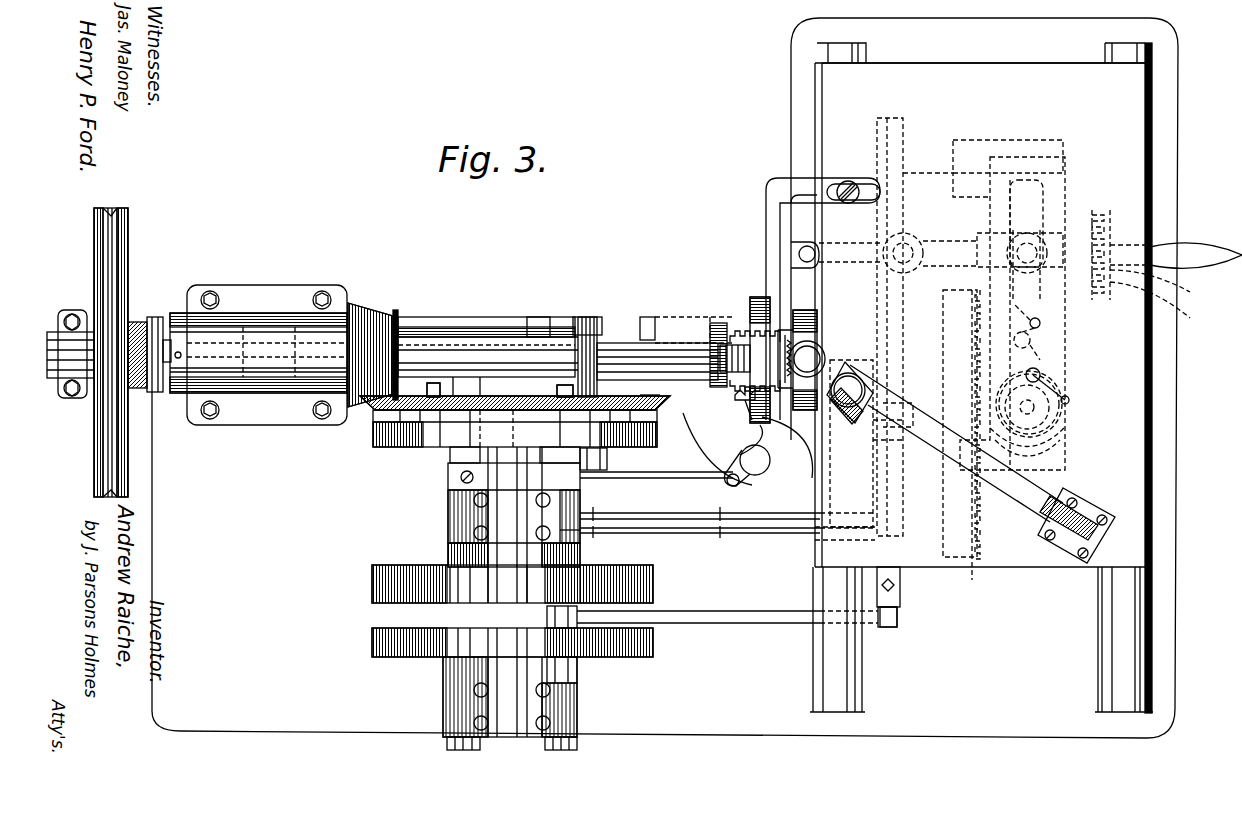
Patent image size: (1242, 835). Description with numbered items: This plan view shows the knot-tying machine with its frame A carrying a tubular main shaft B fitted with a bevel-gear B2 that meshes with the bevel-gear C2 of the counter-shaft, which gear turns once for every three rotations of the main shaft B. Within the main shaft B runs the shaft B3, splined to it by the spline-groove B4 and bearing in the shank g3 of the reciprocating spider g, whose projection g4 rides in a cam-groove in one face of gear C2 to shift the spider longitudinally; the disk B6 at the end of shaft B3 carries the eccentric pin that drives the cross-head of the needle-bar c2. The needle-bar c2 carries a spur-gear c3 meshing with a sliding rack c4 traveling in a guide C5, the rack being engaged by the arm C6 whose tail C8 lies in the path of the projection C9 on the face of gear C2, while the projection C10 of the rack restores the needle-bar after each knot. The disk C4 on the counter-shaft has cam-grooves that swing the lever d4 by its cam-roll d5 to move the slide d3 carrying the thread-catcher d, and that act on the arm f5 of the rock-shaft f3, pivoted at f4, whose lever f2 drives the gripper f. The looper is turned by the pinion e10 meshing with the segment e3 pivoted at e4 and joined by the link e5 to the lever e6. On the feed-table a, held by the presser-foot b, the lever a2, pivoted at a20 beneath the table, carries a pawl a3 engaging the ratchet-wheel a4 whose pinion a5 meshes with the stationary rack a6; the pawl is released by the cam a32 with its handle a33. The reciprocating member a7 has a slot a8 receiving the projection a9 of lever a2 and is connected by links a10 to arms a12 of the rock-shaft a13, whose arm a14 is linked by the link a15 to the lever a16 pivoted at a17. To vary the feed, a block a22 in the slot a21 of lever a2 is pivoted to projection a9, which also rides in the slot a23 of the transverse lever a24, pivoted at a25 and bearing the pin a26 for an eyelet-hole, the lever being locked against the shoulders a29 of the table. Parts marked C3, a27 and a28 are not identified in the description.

The frame A is at (665, 378).
The feed-table a is at (980, 77).
The gripper f is at (109, 352).
The main shaft B is at (258, 328).
The bevel-gear B2 is at (373, 312).
The shaft B3 is at (492, 345).
The spline-groove B4 is at (400, 345).
The disk B6 is at (753, 312).
The bevel-gear C2 is at (372, 418).
The gear C3 is at (372, 642).
The disk C4 is at (372, 582).
The guide C5 is at (687, 316).
The arm or projection C6 is at (587, 318).
The tail or projection C8 is at (557, 390).
The projection C9 is at (427, 388).
The projection C10 is at (740, 349).
The needle-bar c2 is at (822, 345).
The spur-gear c3 is at (818, 362).
The sliding rack c4 is at (808, 330).
The thread-catcher d is at (836, 375).
The slide d3 is at (700, 520).
The lever d4 is at (450, 565).
The cam-roll d5 is at (578, 545).
The presser-foot b is at (878, 392).
The segment e3 is at (738, 403).
The pivot e4 is at (757, 472).
The link e5 is at (663, 480).
The arm or lever e6 is at (607, 464).
The pinion e10 is at (748, 405).
The lever f2 is at (450, 455).
The rock-shaft f3 is at (462, 750).
The pivot f4 is at (443, 700).
The upwardly-projecting arm f5 is at (450, 618).
The reciprocating spider or frame g is at (790, 410).
The shank g3 is at (622, 360).
The projection g4 is at (645, 396).
The lever a2 is at (1042, 326).
The pawl a3 is at (1030, 345).
The ratchet-wheel a4 is at (1062, 405).
The pinion or gear-wheel a5 is at (1064, 440).
The stationary rack a6 is at (975, 582).
The reciprocating member a7 is at (1067, 180).
The slot or channel a8 is at (1043, 200).
The projection a9 is at (1005, 245).
The links a10 is at (953, 160).
The arms a12 is at (925, 188).
The rock-shaft a13 is at (893, 118).
The arm a14 is at (898, 602).
The link a15 is at (752, 624).
The lever a16 is at (577, 672).
The pivot a17 is at (565, 750).
The pivotal connection a20 is at (1049, 413).
The slot a21 is at (1100, 225).
The block a22 is at (1110, 235).
The slot a23 is at (1163, 288).
The lever a24 is at (1163, 306).
The pivot a25 is at (898, 250).
The pin a26 is at (791, 250).
The bracket a27 is at (772, 215).
The screw a28 is at (772, 180).
The shoulders a29 is at (1110, 248).
The cam or eccentric a32 is at (965, 362).
The handle a33 is at (1062, 395).